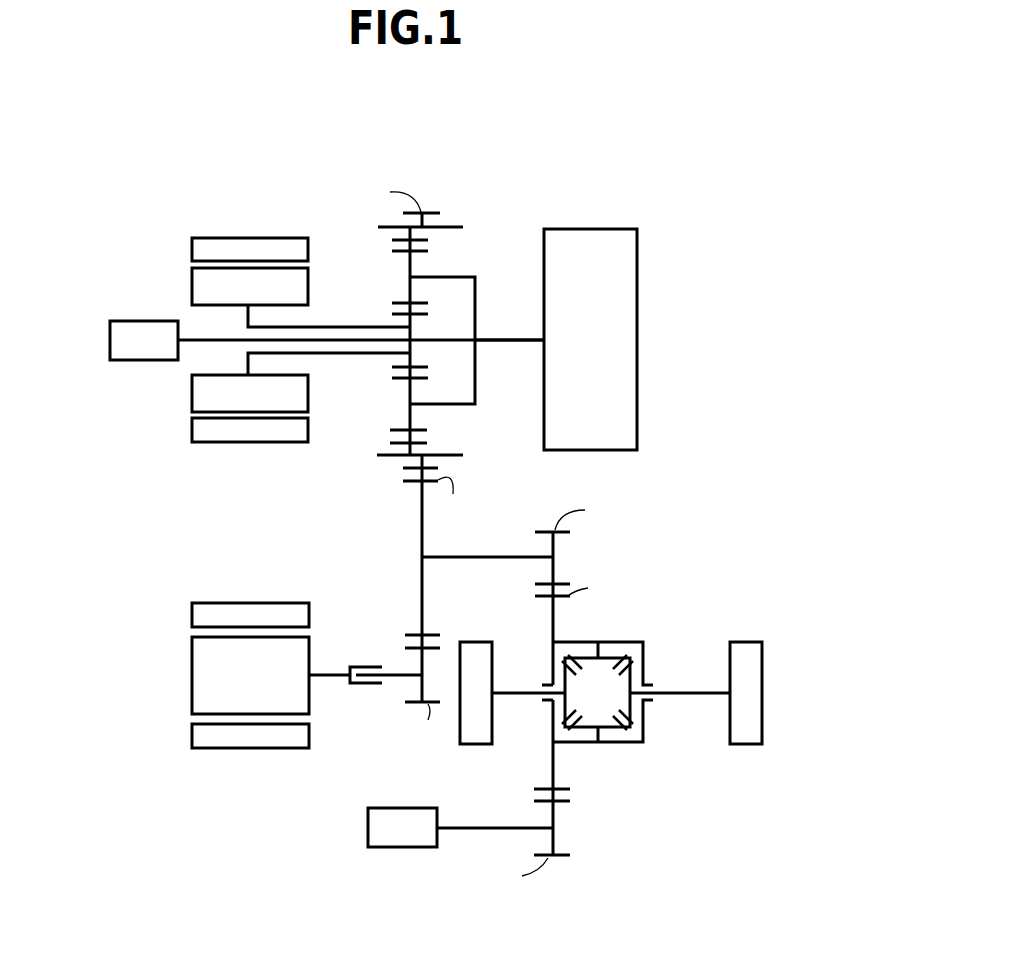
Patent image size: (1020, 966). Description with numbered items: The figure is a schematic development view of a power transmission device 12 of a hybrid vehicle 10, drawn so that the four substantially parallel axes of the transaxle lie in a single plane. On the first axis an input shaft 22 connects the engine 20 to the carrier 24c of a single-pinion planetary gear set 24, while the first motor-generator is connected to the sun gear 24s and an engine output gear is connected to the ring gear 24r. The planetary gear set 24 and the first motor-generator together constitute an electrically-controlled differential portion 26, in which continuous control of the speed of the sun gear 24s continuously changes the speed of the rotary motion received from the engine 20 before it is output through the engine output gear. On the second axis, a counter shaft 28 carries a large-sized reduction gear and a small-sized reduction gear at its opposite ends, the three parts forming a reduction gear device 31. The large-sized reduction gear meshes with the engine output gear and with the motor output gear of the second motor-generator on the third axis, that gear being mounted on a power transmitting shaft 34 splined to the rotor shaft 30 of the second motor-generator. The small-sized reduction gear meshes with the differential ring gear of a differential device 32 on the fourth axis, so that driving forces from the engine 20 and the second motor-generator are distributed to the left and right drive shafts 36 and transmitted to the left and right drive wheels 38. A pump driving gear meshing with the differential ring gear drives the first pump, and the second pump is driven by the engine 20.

The hybrid vehicle 10 is at (612, 96).
The power transmission device 12 is at (257, 137).
The engine 20 is at (628, 288).
The input shaft 22 is at (507, 343).
The planetary gear set 24 is at (348, 447).
The sun gear 24s is at (398, 312).
The carrier 24c is at (450, 275).
The ring gear 24r is at (425, 443).
The electrically-controlled differential portion 26 is at (441, 165).
The counter shaft 28 is at (477, 560).
The rotor shaft 30 is at (338, 677).
The reduction gear device 31 is at (620, 547).
The differential device 32 is at (630, 758).
The power transmitting shaft 34 is at (398, 677).
The drive shafts 36 is at (518, 697).
The drive wheels 38 is at (745, 648).